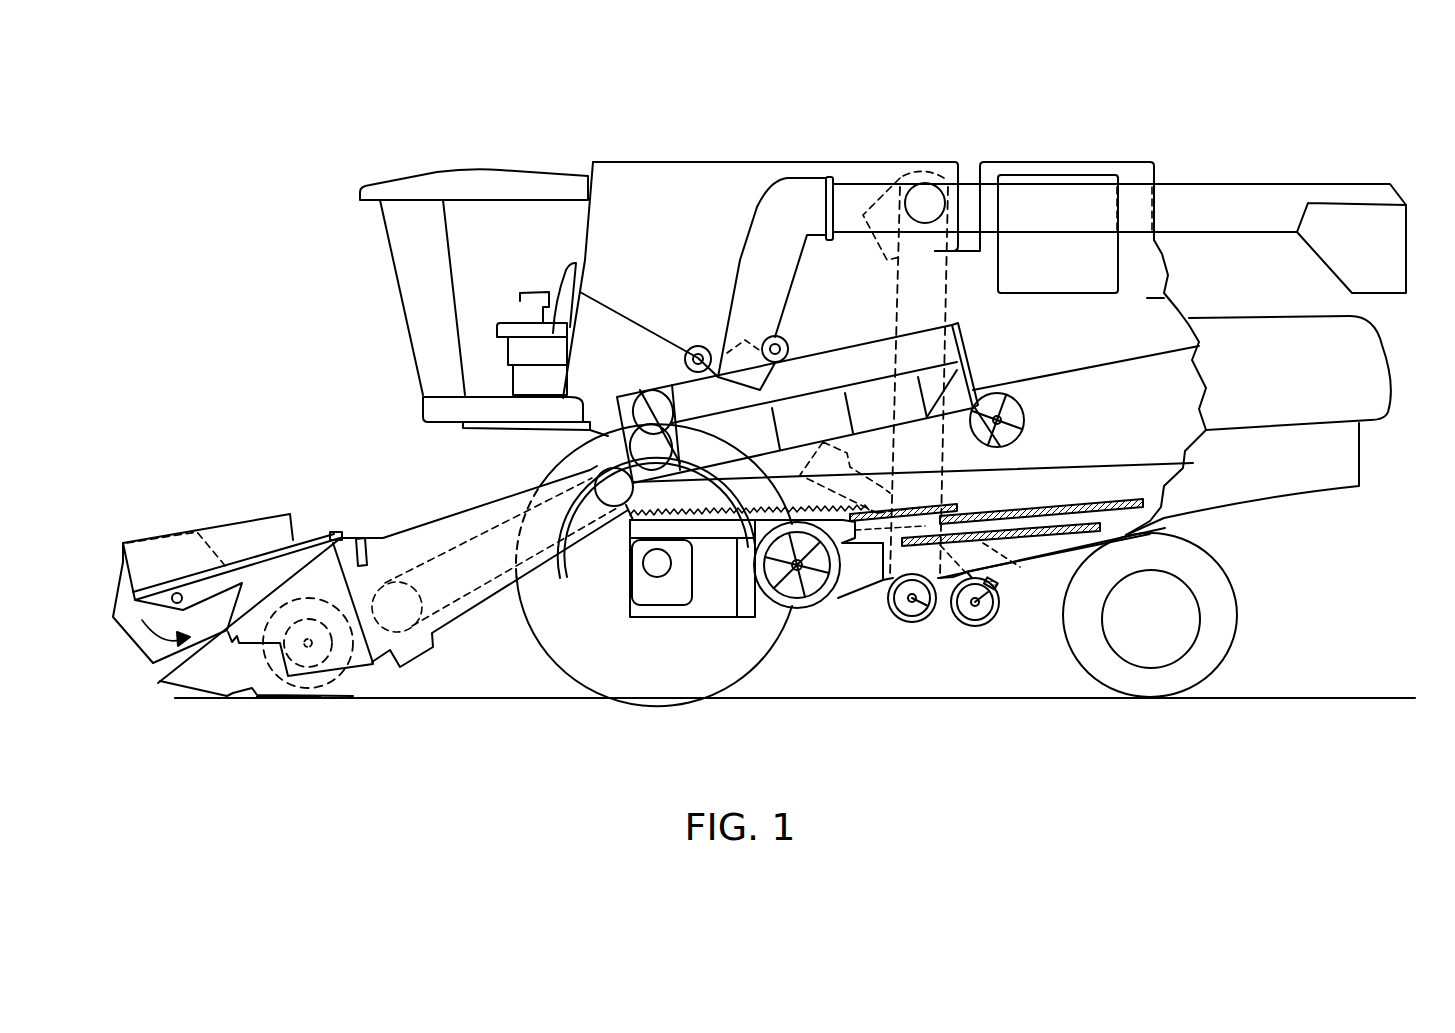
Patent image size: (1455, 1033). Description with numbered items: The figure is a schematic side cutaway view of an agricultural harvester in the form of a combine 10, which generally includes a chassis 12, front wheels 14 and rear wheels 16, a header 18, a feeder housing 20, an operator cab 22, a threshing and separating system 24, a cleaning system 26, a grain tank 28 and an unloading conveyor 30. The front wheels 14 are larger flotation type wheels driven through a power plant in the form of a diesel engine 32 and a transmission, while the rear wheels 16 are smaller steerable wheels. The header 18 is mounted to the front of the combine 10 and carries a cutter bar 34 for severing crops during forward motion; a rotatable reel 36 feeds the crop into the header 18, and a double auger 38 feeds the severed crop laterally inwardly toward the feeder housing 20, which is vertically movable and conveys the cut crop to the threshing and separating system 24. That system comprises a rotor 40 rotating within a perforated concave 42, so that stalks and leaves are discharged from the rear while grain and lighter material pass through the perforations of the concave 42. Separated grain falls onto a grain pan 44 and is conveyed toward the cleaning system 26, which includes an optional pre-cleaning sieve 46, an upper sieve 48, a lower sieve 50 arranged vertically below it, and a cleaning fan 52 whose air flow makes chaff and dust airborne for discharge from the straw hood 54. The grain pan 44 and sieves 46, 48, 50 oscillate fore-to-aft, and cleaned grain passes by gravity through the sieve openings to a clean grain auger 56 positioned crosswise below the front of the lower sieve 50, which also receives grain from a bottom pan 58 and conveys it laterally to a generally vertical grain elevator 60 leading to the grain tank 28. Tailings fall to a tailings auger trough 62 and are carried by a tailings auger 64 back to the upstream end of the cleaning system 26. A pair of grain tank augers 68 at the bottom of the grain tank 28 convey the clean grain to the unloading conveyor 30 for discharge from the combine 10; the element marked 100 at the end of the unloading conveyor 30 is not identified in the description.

The combine 10 is at (461, 140).
The chassis 12 is at (1165, 528).
The front wheels 14 is at (557, 650).
The rear wheels 16 is at (1233, 636).
The header 18 is at (211, 502).
The feeder housing 20 is at (440, 520).
The operator cab 22 is at (396, 275).
The threshing and separating system 24 is at (545, 443).
The cleaning system 26 is at (867, 638).
The grain tank 28 is at (654, 166).
The unloading conveyor 30 is at (1250, 190).
The diesel engine 32 is at (1048, 175).
The cutter bar 34 is at (230, 690).
The rotatable reel 36 is at (118, 587).
The double auger 38 is at (310, 668).
The rotor 40 is at (647, 402).
The perforated concave 42 is at (840, 378).
The grain pan 44 is at (628, 512).
The pre-cleaning sieve 46 is at (952, 508).
The upper sieve 48 is at (1060, 505).
The lower sieve 50 is at (1027, 540).
The cleaning fan 52 is at (790, 607).
The straw hood 54 is at (1380, 356).
The clean grain auger 56 is at (917, 620).
The bottom pan 58 is at (1060, 546).
The grain elevator 60 is at (948, 300).
The tailings auger trough 62 is at (1057, 553).
The tailings auger 64 is at (975, 622).
The grain tank augers 68 is at (696, 346).
The auger discharge spout 100 is at (1396, 241).